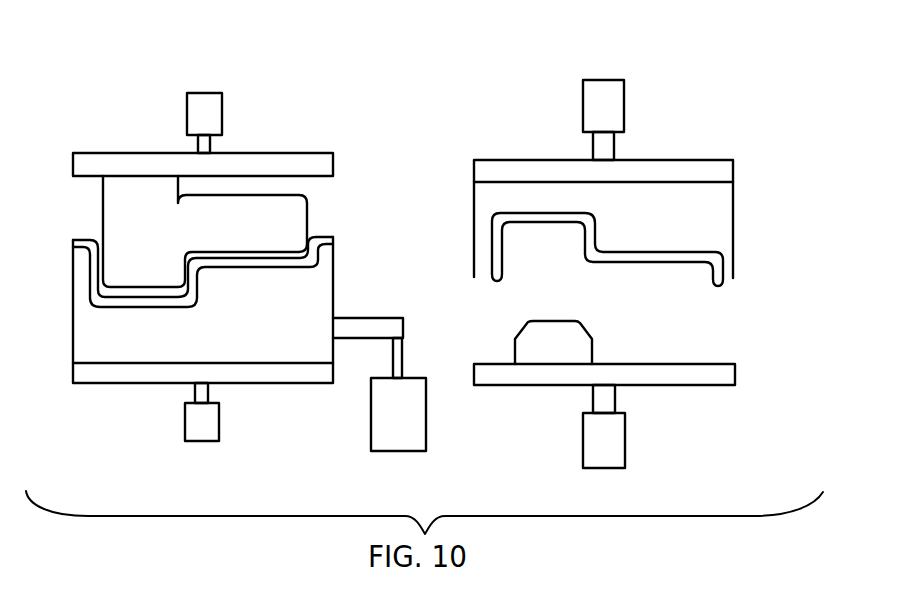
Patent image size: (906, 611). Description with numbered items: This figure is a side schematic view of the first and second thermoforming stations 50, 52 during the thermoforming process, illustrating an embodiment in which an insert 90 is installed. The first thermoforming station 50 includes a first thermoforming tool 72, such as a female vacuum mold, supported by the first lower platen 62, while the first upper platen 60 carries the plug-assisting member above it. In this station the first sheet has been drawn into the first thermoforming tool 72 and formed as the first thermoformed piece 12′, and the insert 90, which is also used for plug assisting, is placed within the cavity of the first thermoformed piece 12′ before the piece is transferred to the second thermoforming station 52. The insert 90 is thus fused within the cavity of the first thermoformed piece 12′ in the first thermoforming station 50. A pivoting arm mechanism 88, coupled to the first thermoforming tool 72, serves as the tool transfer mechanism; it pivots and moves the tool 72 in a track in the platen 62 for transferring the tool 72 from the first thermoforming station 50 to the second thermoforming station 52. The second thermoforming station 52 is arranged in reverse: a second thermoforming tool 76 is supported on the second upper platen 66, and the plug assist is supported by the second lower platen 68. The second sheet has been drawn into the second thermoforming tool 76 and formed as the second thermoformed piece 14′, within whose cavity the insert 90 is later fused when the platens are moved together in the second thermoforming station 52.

The first thermoforming station 50 is at (160, 50).
The second thermoforming station 52 is at (555, 50).
The first upper platen 60 is at (292, 153).
The first lower platen 62 is at (264, 384).
The second upper platen 66 is at (692, 160).
The second lower platen 68 is at (678, 385).
The first thermoforming tool 72 is at (334, 297).
The second thermoforming tool 76 is at (735, 205).
The pivoting arm mechanism 88 is at (405, 358).
The insert 90 is at (290, 189).
The first thermoformed piece 12′ is at (313, 233).
The second thermoformed piece 14′ is at (645, 265).